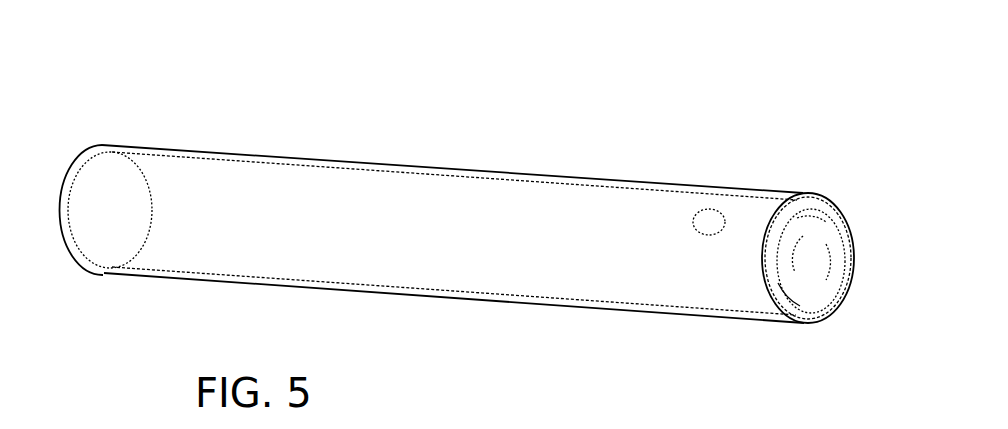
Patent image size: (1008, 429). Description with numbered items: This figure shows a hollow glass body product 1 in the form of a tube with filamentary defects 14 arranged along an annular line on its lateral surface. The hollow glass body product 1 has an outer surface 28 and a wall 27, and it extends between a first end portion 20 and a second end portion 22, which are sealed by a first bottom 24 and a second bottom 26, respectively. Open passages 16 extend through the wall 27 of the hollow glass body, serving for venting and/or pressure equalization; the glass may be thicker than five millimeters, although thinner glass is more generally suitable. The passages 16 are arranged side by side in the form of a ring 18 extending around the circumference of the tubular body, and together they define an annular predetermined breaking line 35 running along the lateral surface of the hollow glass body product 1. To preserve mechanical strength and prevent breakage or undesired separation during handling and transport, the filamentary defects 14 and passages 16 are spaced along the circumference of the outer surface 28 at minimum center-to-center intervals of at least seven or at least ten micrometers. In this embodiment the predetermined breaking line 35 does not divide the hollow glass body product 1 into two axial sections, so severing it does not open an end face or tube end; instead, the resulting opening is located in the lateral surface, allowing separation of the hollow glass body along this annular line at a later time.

The hollow glass body product 1 is at (280, 38).
The filamentary defects 14 is at (698, 236).
The passage 16 is at (712, 235).
The ring 18 is at (712, 208).
The first end portion 20 is at (738, 160).
The second end portion 22 is at (112, 126).
The first bottom 24 is at (800, 223).
The second bottom 26 is at (90, 178).
The wall 27 is at (390, 188).
The outer surface 28 is at (490, 198).
The predetermined breaking line 35 is at (742, 238).